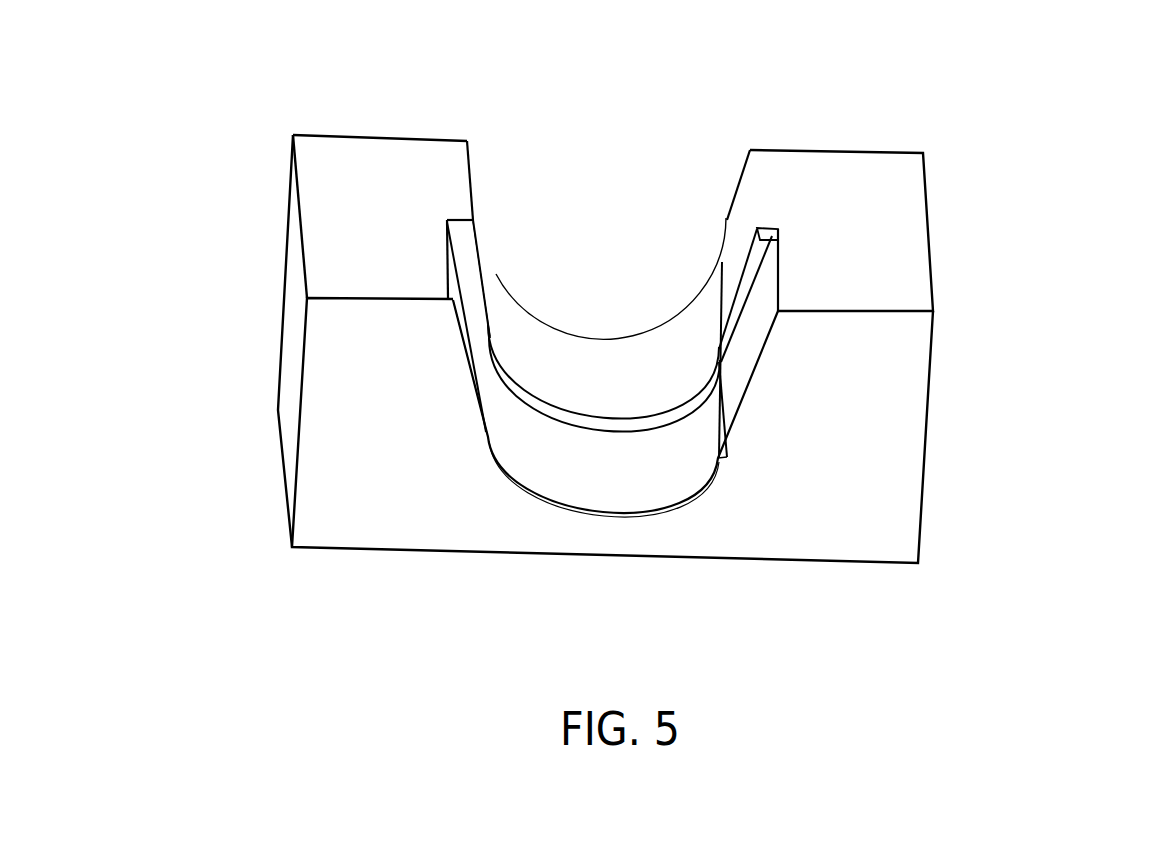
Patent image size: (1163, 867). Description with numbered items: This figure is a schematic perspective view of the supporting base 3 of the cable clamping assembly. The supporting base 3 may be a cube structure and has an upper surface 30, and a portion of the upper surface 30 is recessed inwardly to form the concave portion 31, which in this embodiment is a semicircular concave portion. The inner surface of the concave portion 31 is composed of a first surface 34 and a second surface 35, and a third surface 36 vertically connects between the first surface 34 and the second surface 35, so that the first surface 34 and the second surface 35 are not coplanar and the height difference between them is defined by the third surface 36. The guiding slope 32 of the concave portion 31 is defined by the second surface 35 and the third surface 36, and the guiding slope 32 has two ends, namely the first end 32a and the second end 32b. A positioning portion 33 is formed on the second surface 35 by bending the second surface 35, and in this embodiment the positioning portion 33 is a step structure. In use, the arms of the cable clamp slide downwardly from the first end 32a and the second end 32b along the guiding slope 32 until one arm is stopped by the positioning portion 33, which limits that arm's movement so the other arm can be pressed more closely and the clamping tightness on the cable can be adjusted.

The supporting base 3 is at (1140, 112).
The upper surface 30 is at (890, 228).
The concave portion 31 is at (621, 268).
The guiding slope 32 is at (775, 243).
The first end 32a is at (768, 237).
The second end 32b is at (473, 218).
The positioning portion 33 is at (725, 458).
The first surface 34 is at (515, 332).
The second surface 35 is at (467, 320).
The third surface 36 is at (465, 262).